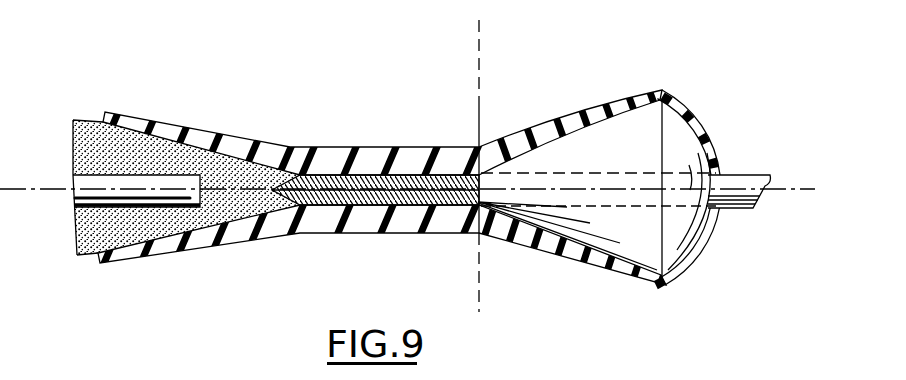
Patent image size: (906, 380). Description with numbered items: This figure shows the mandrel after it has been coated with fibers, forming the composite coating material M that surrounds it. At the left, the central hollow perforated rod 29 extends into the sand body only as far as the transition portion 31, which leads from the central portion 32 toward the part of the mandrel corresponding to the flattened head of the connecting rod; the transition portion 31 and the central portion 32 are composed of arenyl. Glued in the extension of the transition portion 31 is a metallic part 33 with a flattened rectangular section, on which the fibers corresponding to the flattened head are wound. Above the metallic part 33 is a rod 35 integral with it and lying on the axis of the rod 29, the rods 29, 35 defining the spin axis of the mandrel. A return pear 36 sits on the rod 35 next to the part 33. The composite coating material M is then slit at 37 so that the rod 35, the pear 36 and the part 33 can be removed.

The central hollow perforated rod 29 is at (155, 180).
The transition portion 31 is at (170, 217).
The central portion 32 is at (105, 150).
The metallic part 33 is at (330, 192).
The composite coating material M is at (368, 160).
The rod 35 is at (765, 180).
The return pear 36 is at (612, 152).
The slit 37 is at (479, 97).